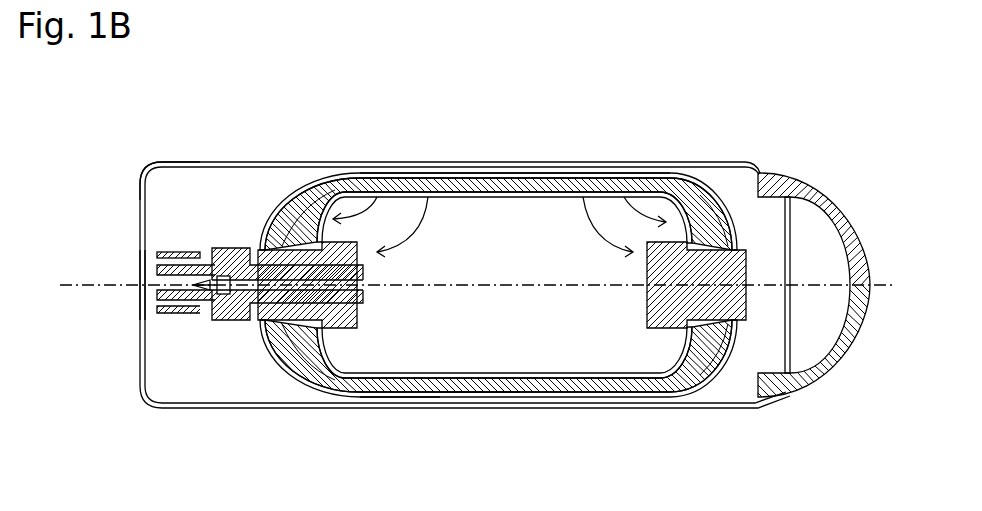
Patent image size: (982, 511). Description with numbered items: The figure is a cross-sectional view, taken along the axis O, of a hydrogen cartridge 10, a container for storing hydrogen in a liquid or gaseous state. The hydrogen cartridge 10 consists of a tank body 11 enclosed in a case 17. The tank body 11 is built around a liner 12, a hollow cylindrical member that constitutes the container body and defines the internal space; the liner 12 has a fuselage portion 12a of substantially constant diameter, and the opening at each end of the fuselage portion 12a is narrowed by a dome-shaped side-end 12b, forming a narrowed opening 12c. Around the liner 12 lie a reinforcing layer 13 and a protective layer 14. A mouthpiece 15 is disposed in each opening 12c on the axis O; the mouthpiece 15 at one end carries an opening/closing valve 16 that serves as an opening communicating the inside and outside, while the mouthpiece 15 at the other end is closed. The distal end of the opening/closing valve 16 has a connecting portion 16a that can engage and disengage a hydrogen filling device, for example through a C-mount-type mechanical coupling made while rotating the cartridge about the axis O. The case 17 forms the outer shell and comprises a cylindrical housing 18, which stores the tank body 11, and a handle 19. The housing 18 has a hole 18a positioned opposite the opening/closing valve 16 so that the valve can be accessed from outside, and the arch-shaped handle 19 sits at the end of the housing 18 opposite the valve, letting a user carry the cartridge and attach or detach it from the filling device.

The hydrogen cartridge 10 is at (788, 105).
The tank body 11 is at (278, 186).
The liner 12 is at (530, 195).
The fuselage portion 12a is at (478, 195).
The dome-shaped side-end 12b is at (377, 197).
The opening 12c is at (428, 197).
The reinforcing layer 13 is at (400, 397).
The protective layer 14 is at (455, 397).
The mouthpiece 15 is at (262, 250).
The opening/closing valve 16 is at (207, 256).
The connecting portion 16a is at (172, 256).
The case 17 is at (130, 134).
The housing 18 is at (668, 162).
The hole 18a is at (141, 264).
The handle 19 is at (818, 195).